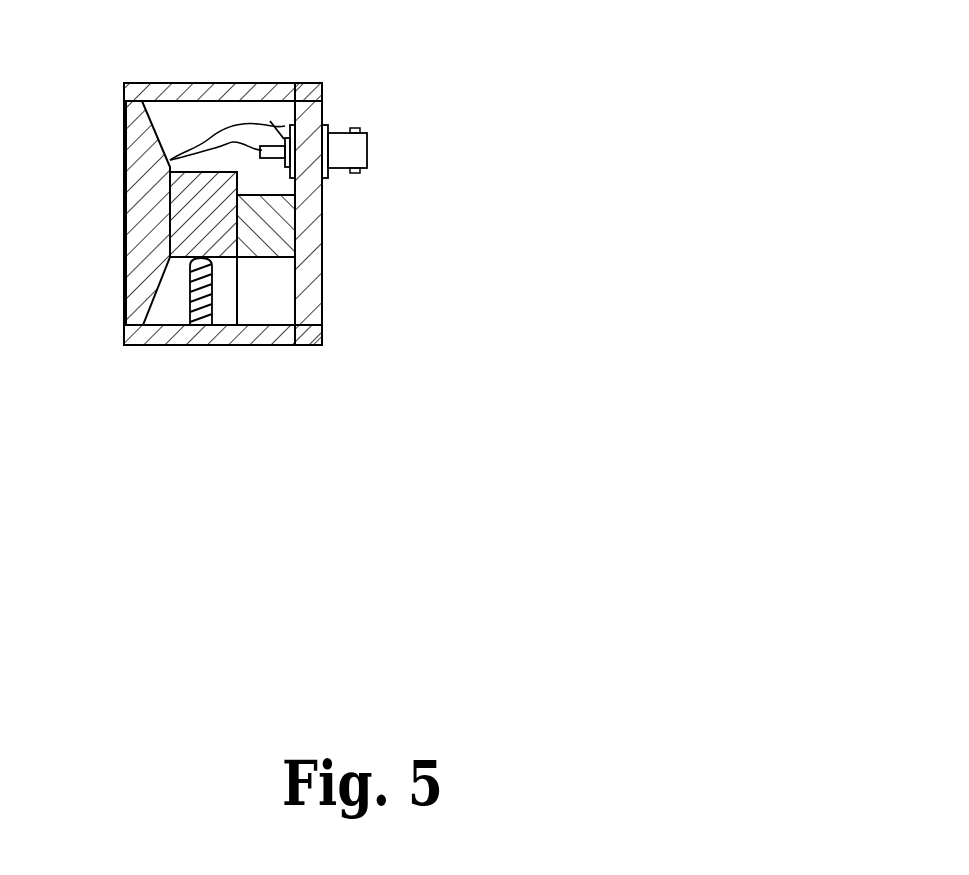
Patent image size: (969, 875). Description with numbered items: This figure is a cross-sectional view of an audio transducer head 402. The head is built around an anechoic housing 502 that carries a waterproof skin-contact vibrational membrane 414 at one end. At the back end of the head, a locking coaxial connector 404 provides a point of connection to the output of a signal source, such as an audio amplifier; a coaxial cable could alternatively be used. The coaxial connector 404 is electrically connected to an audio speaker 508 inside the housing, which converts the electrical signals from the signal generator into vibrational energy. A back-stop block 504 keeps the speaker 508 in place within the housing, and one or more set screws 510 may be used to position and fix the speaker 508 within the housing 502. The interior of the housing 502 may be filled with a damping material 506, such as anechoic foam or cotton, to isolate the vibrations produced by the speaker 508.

The audio transducer head 402 is at (120, 38).
The anechoic housing 502 is at (338, 96).
The locking coaxial connector 404 is at (392, 149).
The back-stop block 504 is at (300, 212).
The damping material 506 is at (293, 270).
The audio speaker 508 is at (475, 231).
The set screw 510 is at (483, 325).
The waterproof skin-contact vibrational membrane 414 is at (106, 295).